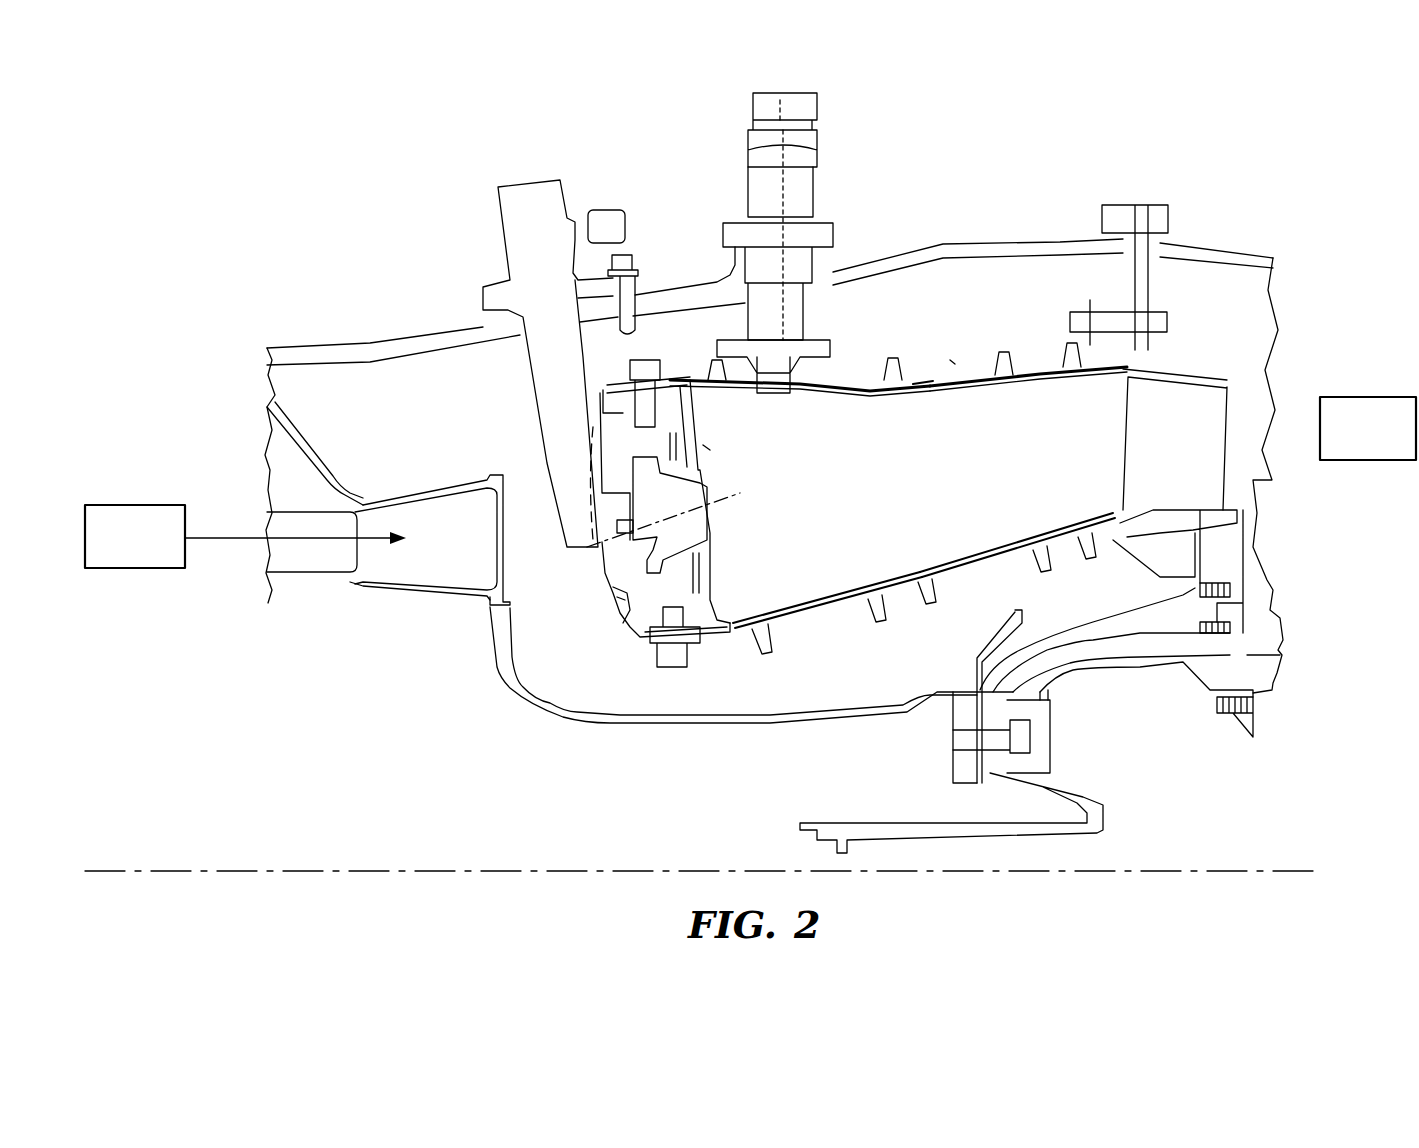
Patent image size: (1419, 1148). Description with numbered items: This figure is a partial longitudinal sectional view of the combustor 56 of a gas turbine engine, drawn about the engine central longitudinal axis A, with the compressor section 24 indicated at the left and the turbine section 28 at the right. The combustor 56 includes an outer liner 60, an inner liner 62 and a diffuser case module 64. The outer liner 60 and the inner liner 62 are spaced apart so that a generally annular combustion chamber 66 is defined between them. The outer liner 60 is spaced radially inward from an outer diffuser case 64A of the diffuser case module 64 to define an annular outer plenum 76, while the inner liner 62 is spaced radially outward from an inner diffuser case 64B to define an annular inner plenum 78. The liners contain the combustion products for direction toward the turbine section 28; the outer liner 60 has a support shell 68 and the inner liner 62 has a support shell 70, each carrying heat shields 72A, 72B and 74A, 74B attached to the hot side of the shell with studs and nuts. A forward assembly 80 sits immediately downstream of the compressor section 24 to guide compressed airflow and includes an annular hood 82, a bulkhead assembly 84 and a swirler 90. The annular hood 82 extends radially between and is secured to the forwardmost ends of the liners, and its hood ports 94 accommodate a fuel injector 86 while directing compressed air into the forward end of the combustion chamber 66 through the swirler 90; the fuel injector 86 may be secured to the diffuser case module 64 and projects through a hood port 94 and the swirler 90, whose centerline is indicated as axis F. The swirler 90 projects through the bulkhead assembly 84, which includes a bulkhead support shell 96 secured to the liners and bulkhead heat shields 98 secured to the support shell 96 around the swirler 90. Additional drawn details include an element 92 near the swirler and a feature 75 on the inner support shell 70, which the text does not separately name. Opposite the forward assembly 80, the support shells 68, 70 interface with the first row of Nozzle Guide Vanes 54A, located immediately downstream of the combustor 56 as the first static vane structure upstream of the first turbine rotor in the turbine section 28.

The compressor section 24 is at (121, 551).
The turbine section 28 is at (1355, 444).
The combustor 56 is at (1052, 145).
The Nozzle Guide Vanes 54A is at (1155, 454).
The outer liner 60 is at (951, 360).
The inner liner 62 is at (897, 599).
The diffuser case module 64 is at (945, 242).
The outer diffuser case 64A is at (1022, 243).
The inner diffuser case 64B is at (758, 725).
The combustion chamber 66 is at (883, 489).
The outer support shell 68 is at (917, 383).
The inner support shell 70 is at (1010, 560).
The heat shield 72A is at (815, 394).
The heat shield 72B is at (990, 393).
The heat shield 74A is at (815, 585).
The heat shield 74B is at (1003, 548).
The aft support 75 is at (1087, 535).
The annular outer plenum 76 is at (856, 312).
The annular inner plenum 78 is at (811, 674).
The forward assembly 80 is at (616, 648).
The annular hood 82 is at (625, 603).
The bulkhead assembly 84 is at (703, 446).
The fuel injector 86 is at (534, 316).
The swirler 90 is at (707, 550).
The heat shield 92 is at (706, 473).
The hood port 94 is at (613, 590).
The bulkhead support shell 96 is at (632, 618).
The bulkhead heat shield 98 is at (708, 578).
The fuel nozzle axis F is at (745, 497).
The engine central longitudinal axis A is at (1307, 869).